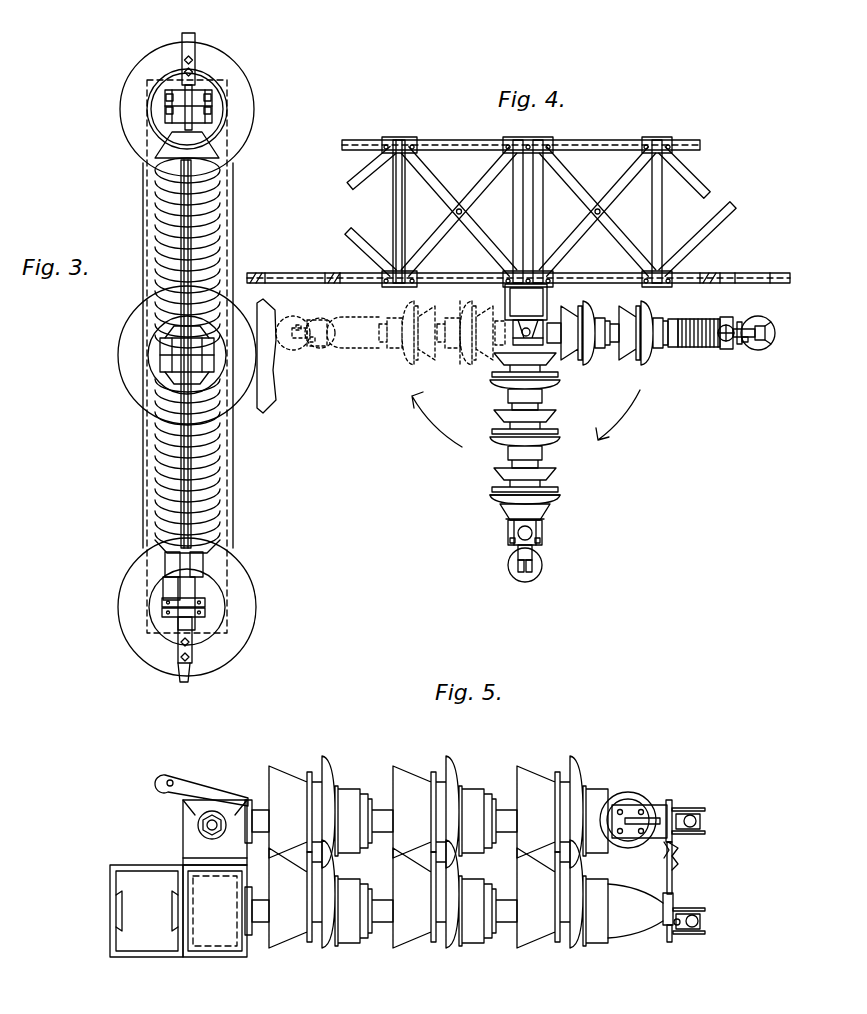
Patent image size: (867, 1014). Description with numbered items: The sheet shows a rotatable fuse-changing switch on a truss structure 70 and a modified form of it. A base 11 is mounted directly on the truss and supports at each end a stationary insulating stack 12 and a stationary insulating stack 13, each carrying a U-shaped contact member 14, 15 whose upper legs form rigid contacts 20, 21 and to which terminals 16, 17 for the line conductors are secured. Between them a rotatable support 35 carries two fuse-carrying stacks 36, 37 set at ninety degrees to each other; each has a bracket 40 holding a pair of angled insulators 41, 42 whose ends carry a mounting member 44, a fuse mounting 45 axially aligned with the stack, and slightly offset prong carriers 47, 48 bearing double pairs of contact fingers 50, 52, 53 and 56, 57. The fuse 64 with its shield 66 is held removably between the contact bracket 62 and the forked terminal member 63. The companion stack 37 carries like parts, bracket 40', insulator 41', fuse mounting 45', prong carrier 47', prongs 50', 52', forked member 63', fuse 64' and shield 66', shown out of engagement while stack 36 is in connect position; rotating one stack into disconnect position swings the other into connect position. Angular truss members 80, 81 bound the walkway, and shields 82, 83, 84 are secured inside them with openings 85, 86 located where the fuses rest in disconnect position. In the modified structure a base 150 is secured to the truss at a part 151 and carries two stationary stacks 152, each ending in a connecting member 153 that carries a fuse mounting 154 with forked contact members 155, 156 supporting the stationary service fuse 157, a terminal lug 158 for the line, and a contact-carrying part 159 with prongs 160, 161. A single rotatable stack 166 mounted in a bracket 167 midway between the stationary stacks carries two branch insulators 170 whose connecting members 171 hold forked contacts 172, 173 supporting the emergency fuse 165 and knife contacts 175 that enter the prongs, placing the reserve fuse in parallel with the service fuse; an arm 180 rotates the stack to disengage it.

In FIG. 3, the base 11 is at (236, 191).
In FIG. 4, the base 11 is at (506, 297).
In FIG. 3, the stationary insulating stack 12 is at (246, 92).
In FIG. 4, the stationary insulating stack 12 is at (496, 360).
In FIG. 3, the stationary insulating stack 13 is at (130, 628).
In FIG. 3, the contact member 14 is at (207, 90).
In FIG. 4, the contact member 14 is at (510, 538).
In FIG. 3, the contact member 15 is at (192, 630).
In FIG. 3, the terminal 16 is at (192, 50).
In FIG. 4, the terminal 16 is at (530, 518).
In FIG. 3, the terminal 17 is at (190, 668).
In FIG. 4, the upper leg contact 20 is at (544, 545).
In FIG. 3, the upper leg contact 21 is at (196, 592).
In FIG. 4, the support 35 is at (566, 350).
In FIG. 3, the rotatable fuse-carrying stack 36 is at (125, 385).
In FIG. 4, the rotatable fuse-carrying stack 36 is at (455, 350).
In FIG. 3, the rotatable fuse-carrying stack 37 is at (268, 412).
In FIG. 4, the rotatable fuse-carrying stack 37 is at (640, 352).
In FIG. 3, the bracket 40 is at (152, 354).
In FIG. 3, the insulator 41 is at (164, 253).
In FIG. 4, the insulator 41 is at (438, 414).
In FIG. 3, the insulator 42 is at (160, 495).
In FIG. 3, the mounting member 44 is at (170, 560).
In FIG. 3, the fuse mounting 45 is at (169, 101).
In FIG. 4, the fuse mounting 45 is at (491, 559).
In FIG. 3, the contact prong mounting 47 is at (141, 118).
In FIG. 3, the contact prong mounting 48 is at (168, 588).
In FIG. 4, the contact finger 50 is at (439, 429).
In FIG. 3, the contact finger 52 is at (246, 104).
In FIG. 4, the contact finger 52 is at (439, 448).
In FIG. 3, the contact finger 53 is at (211, 111).
In FIG. 3, the contact finger 56 is at (206, 614).
In FIG. 3, the contact finger 57 is at (206, 603).
In FIG. 3, the contact bracket 62 is at (166, 111).
In FIG. 3, the forked terminal member 63 is at (132, 97).
In FIG. 4, the forked terminal member 63 is at (402, 464).
In FIG. 3, the fuse 64 is at (226, 354).
In FIG. 4, the fuse 64 is at (415, 447).
In FIG. 3, the shield 66 is at (218, 146).
In FIG. 4, the shield 66 is at (427, 439).
In FIG. 4, the truss structure 70 is at (605, 158).
In FIG. 4, the truss member 80 is at (440, 140).
In FIG. 4, the truss member 81 is at (455, 273).
In FIG. 4, the shield 82 is at (256, 273).
In FIG. 4, the shield 83 is at (332, 273).
In FIG. 4, the shield 84 is at (785, 273).
In FIG. 4, the opening 85 is at (298, 273).
In FIG. 4, the opening 86 is at (738, 273).
In FIG. 4, the bracket 40' is at (682, 318).
In FIG. 4, the insulator 41' is at (706, 317).
In FIG. 4, the fuse mounting 45' is at (755, 348).
In FIG. 4, the contact prong mounting 47' is at (743, 320).
In FIG. 4, the contact prong 50' is at (724, 351).
In FIG. 4, the contact prong 52' is at (752, 366).
In FIG. 4, the forked terminal member 63' is at (779, 341).
In FIG. 4, the fuse 64' is at (764, 327).
In FIG. 4, the shield 66' is at (766, 323).
In FIG. 5, the base 150 is at (217, 955).
In FIG. 5, the truss attachment part 151 is at (118, 960).
In FIG. 5, the stationary stack 152 is at (375, 862).
In FIG. 5, the connecting member 153 is at (636, 915).
In FIG. 5, the fuse mounting 154 is at (674, 905).
In FIG. 5, the forked contact member 155 is at (704, 910).
In FIG. 5, the forked contact member 156 is at (702, 933).
In FIG. 5, the service fuse 157 is at (700, 921).
In FIG. 5, the terminal lug 158 is at (680, 928).
In FIG. 5, the contact-carrying part 159 is at (674, 880).
In FIG. 5, the contact prong 160 is at (665, 856).
In FIG. 5, the contact prong 161 is at (679, 850).
In FIG. 5, the emergency fuse 165 is at (697, 821).
In FIG. 5, the rotatable stack 166 is at (372, 800).
In FIG. 5, the bracket 167 is at (183, 830).
In FIG. 5, the branch insulator 170 is at (635, 793).
In FIG. 5, the connecting member 171 is at (652, 810).
In FIG. 5, the forked contact member 172 is at (690, 808).
In FIG. 5, the forked contact member 173 is at (702, 833).
In FIG. 5, the knife contact 175 is at (645, 838).
In FIG. 5, the arm 180 is at (178, 780).